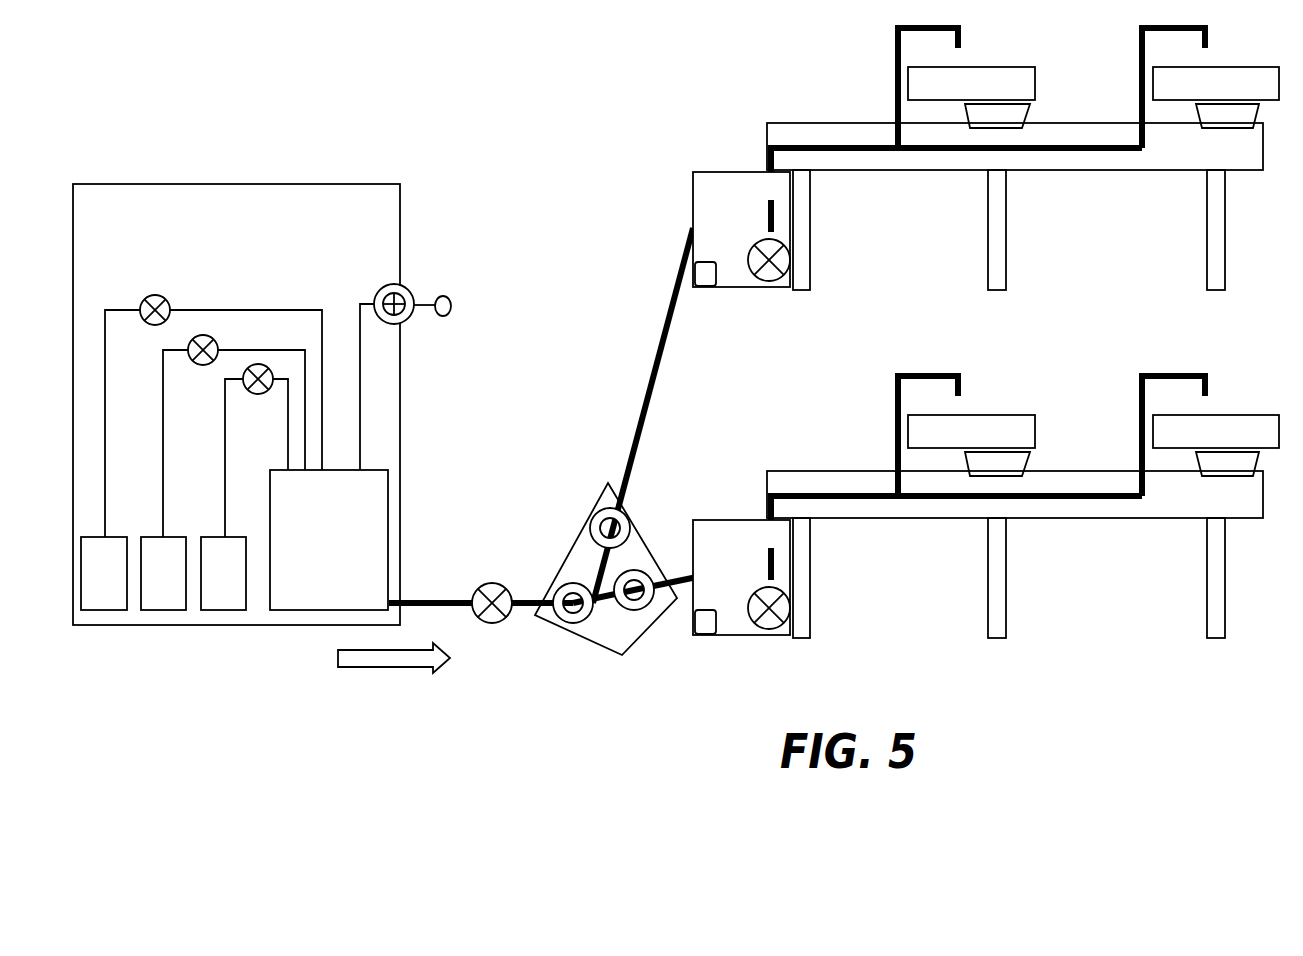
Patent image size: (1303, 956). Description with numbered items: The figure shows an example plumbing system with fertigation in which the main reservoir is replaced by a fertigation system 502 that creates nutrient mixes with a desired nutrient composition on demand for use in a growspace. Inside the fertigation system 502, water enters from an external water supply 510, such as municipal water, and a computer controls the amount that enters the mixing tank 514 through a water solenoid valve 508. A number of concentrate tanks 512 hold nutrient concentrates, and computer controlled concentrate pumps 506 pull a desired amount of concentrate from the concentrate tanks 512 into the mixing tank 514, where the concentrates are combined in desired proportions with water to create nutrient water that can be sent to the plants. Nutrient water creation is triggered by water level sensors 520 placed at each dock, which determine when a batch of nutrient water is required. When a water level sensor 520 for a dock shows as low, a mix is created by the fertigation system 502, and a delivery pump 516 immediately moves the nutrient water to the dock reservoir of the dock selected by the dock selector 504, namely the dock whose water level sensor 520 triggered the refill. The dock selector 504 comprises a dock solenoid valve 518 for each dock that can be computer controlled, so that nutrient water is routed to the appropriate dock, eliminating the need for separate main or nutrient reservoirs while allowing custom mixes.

The fertigation system 502 is at (291, 444).
The dock selector 504 is at (571, 498).
The concentrate pumps 506 is at (213, 342).
The water solenoid valve 508 is at (413, 286).
The external water supply 510 is at (454, 311).
The concentrate tanks 512 is at (212, 586).
The mixing tank 514 is at (329, 540).
The delivery pump 516 is at (481, 621).
The dock solenoid valve 518 is at (576, 624).
The water level sensors 520 is at (707, 606).